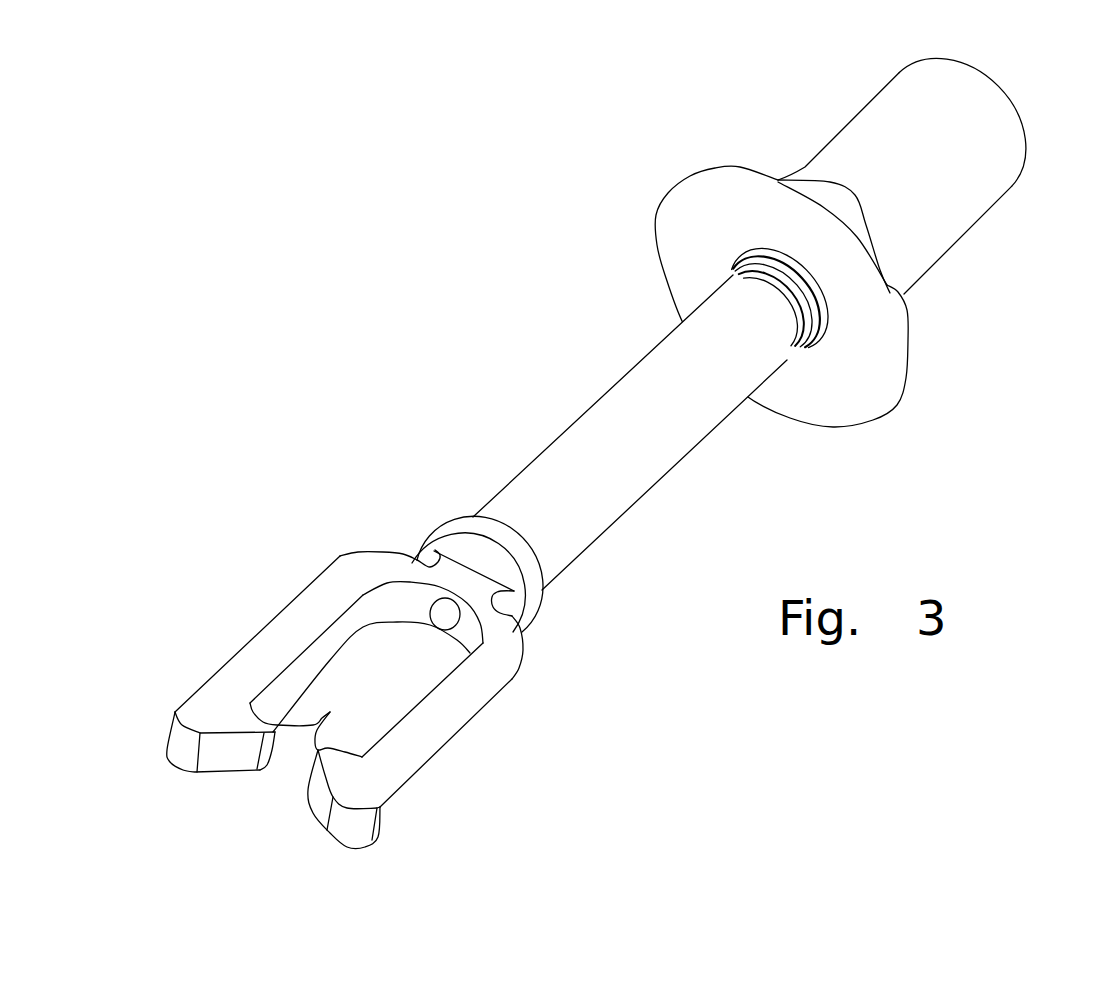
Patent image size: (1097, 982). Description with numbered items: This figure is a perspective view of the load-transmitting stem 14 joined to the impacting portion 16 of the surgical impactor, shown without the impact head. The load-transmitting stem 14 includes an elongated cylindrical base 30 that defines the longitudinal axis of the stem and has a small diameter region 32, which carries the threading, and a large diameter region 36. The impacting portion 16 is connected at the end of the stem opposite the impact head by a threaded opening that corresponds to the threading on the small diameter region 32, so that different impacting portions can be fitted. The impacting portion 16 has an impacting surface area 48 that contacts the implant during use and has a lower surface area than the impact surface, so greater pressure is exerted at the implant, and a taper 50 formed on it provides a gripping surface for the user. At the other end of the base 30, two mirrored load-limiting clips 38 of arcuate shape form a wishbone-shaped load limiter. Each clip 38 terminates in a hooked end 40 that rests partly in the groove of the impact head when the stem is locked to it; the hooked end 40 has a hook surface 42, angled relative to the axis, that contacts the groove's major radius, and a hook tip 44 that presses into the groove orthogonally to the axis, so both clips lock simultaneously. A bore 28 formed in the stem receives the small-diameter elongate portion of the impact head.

The load-transmitting stem 14 is at (442, 577).
The impacting portion 16 is at (977, 220).
The bore 28 is at (445, 620).
The elongated cylindrical base 30 is at (677, 465).
The small diameter region 32 is at (777, 270).
The large diameter region 36 is at (540, 602).
The load-limiting clip 38 is at (277, 611).
The hooked end 40 is at (173, 753).
The hook surface 42 is at (317, 798).
The hook tip 44 is at (330, 714).
The impacting surface area 48 is at (1013, 100).
The taper 50 is at (777, 178).